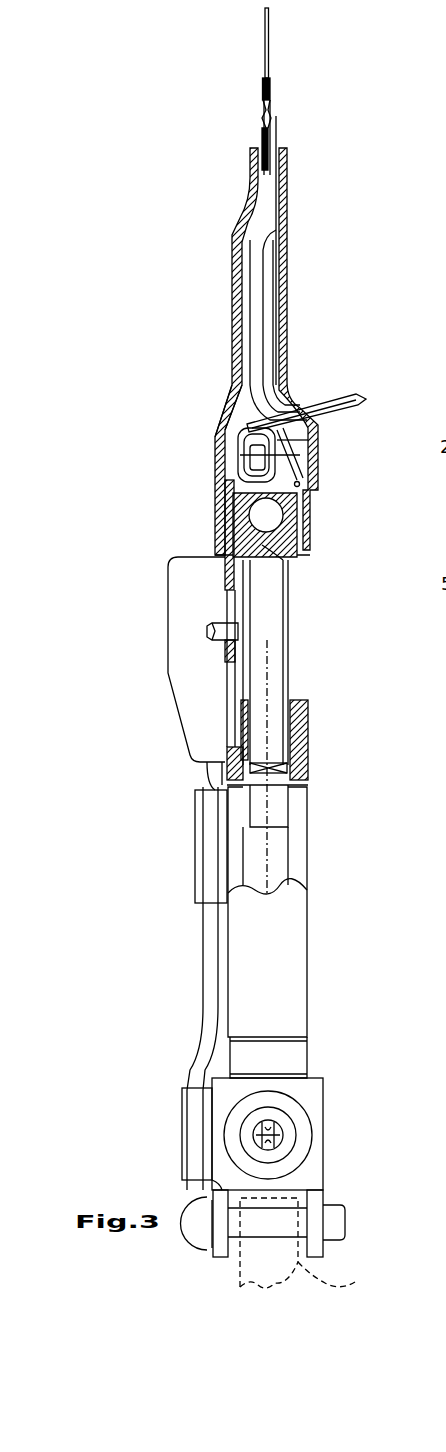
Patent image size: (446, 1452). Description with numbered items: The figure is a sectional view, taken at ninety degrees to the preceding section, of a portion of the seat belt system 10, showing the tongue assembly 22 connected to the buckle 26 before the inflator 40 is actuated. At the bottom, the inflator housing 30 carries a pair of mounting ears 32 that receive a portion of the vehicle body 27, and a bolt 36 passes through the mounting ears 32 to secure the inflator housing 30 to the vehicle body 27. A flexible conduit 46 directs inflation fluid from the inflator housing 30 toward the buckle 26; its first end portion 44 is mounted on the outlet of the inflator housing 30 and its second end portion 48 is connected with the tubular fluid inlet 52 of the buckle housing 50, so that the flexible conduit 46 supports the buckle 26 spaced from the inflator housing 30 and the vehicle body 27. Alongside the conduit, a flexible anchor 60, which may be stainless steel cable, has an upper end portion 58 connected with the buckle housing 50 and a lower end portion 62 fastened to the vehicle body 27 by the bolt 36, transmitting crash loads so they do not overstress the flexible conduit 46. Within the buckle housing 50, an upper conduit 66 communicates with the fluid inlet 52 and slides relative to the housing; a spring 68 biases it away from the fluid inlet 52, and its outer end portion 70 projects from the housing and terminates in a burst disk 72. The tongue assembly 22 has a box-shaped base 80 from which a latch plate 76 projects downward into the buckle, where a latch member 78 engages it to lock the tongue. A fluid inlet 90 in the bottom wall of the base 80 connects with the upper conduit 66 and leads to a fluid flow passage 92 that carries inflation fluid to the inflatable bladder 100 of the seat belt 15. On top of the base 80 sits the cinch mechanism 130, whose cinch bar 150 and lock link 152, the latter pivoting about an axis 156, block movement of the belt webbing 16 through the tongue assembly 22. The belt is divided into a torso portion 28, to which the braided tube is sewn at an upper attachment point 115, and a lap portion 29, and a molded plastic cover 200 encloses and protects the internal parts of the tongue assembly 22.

The seat belt system 10 is at (150, 918).
The seat belt 15 is at (214, 48).
The seat belt webbing 16 is at (268, 25).
The tongue assembly 22 is at (168, 272).
The buckle 26 is at (168, 738).
The vehicle body 27 is at (315, 1243).
The torso portion 28 is at (285, 67).
The lap portion 29 is at (355, 384).
The inflator housing 30 is at (325, 1155).
The mounting ears 32 is at (325, 1258).
The bolt 36 is at (345, 1218).
The inflator 40 is at (305, 1120).
The first end portion of the flexible conduit 44 is at (292, 1053).
The flexible conduit 46 is at (358, 988).
The second end portion of the flexible conduit 48 is at (298, 837).
The buckle housing 50 is at (322, 752).
The fluid inlet 52 is at (276, 800).
The upper end portion of the anchor 58 is at (195, 851).
The flexible anchor 60 is at (192, 988).
The lower end portion of the anchor 62 is at (182, 1145).
The upper conduit 66 is at (290, 650).
The spring 68 is at (268, 760).
The outer end portion of the upper conduit 70 is at (290, 572).
The burst disk 72 is at (282, 575).
The latch plate 76 is at (225, 650).
The latch member 78 is at (207, 632).
The base 80 is at (300, 512).
The fluid inlet 90 is at (226, 540).
The fluid flow passage 92 is at (242, 520).
The inflatable bladder 100 is at (252, 300).
The upper attachment point 115 is at (262, 95).
The cinch mechanism 130 is at (213, 413).
The cinch bar 150 is at (240, 455).
The lock link 152 is at (300, 441).
The axis 156 is at (305, 442).
The cover 200 is at (302, 206).